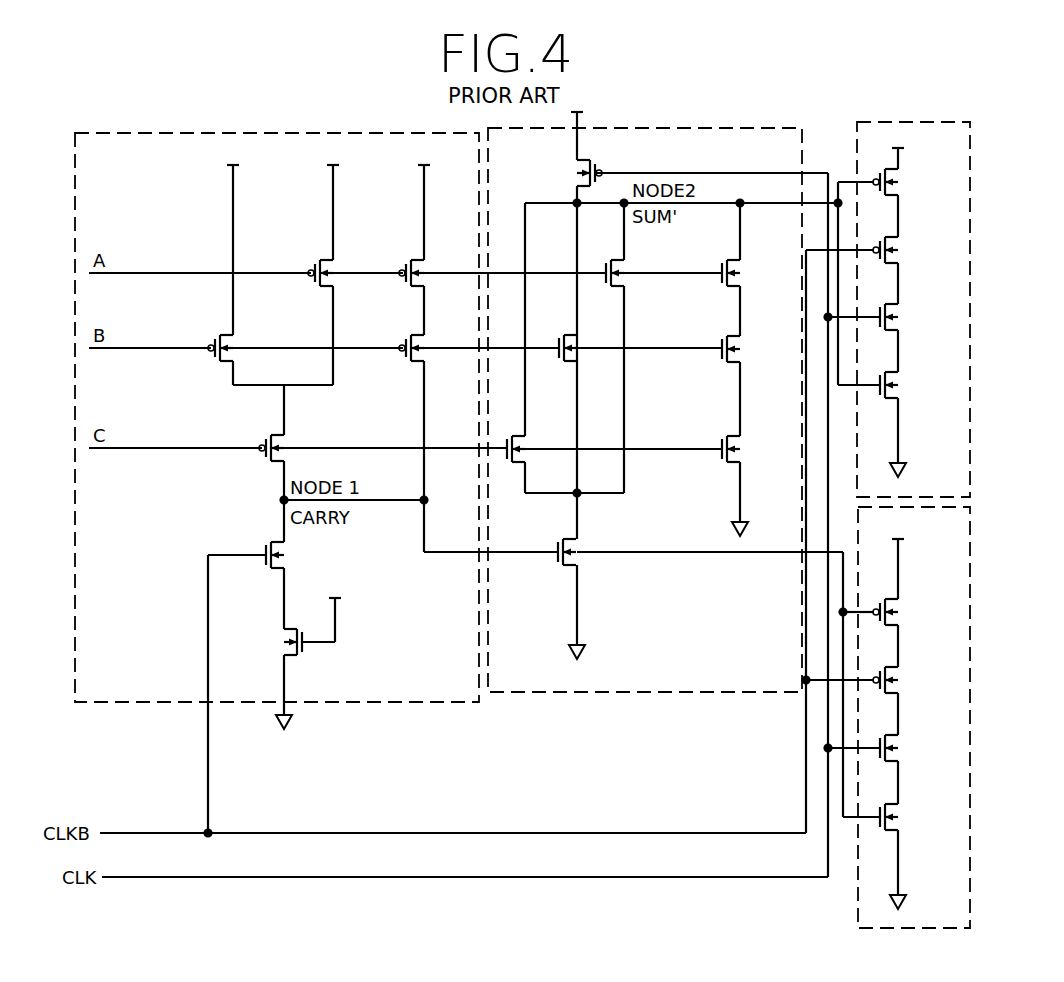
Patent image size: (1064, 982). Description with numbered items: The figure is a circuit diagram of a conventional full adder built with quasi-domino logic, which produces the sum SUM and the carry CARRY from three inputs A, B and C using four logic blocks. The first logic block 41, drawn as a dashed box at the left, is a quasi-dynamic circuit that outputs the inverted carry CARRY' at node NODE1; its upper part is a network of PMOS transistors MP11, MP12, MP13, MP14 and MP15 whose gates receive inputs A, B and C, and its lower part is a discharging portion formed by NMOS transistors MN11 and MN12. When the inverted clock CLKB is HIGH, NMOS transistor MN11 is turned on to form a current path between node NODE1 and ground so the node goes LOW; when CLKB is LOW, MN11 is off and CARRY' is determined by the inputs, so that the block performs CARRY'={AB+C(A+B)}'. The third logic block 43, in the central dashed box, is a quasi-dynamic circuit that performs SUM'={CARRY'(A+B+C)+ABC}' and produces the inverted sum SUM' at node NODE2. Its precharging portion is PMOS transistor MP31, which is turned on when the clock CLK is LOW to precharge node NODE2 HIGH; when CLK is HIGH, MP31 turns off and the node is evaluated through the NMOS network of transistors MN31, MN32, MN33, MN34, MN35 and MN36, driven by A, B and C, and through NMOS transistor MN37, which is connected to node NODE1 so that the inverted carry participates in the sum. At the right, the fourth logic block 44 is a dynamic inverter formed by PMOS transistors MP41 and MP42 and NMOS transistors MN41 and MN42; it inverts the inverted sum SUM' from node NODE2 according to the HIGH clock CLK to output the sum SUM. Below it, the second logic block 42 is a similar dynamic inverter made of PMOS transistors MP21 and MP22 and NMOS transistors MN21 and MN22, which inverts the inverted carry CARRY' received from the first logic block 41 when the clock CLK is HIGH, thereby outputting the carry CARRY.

The first logic block 41 is at (358, 690).
The second logic block 42 is at (968, 772).
The third logic block 43 is at (691, 686).
The fourth logic block 44 is at (968, 210).
The PMOS transistor MP11 is at (348, 265).
The PMOS transistor MP12 is at (248, 340).
The PMOS transistor MP13 is at (299, 440).
The PMOS transistor MP14 is at (438, 265).
The PMOS transistor MP15 is at (438, 340).
The NMOS transistor MN11 is at (304, 555).
The NMOS transistor MN12 is at (262, 642).
The PMOS transistor MP31 is at (553, 173).
The NMOS transistor MN31 is at (644, 265).
The NMOS transistor MN32 is at (759, 273).
The NMOS transistor MN33 is at (595, 340).
The NMOS transistor MN34 is at (759, 349).
The NMOS transistor MN35 is at (544, 441).
The NMOS transistor MN36 is at (759, 449).
The NMOS transistor MN37 is at (597, 547).
The PMOS transistor MP41 is at (913, 182).
The PMOS transistor MP42 is at (913, 250).
The NMOS transistor MN41 is at (918, 317).
The NMOS transistor MN42 is at (918, 385).
The PMOS transistor MP21 is at (913, 612).
The PMOS transistor MP22 is at (913, 680).
The NMOS transistor MN21 is at (918, 748).
The NMOS transistor MN22 is at (918, 817).